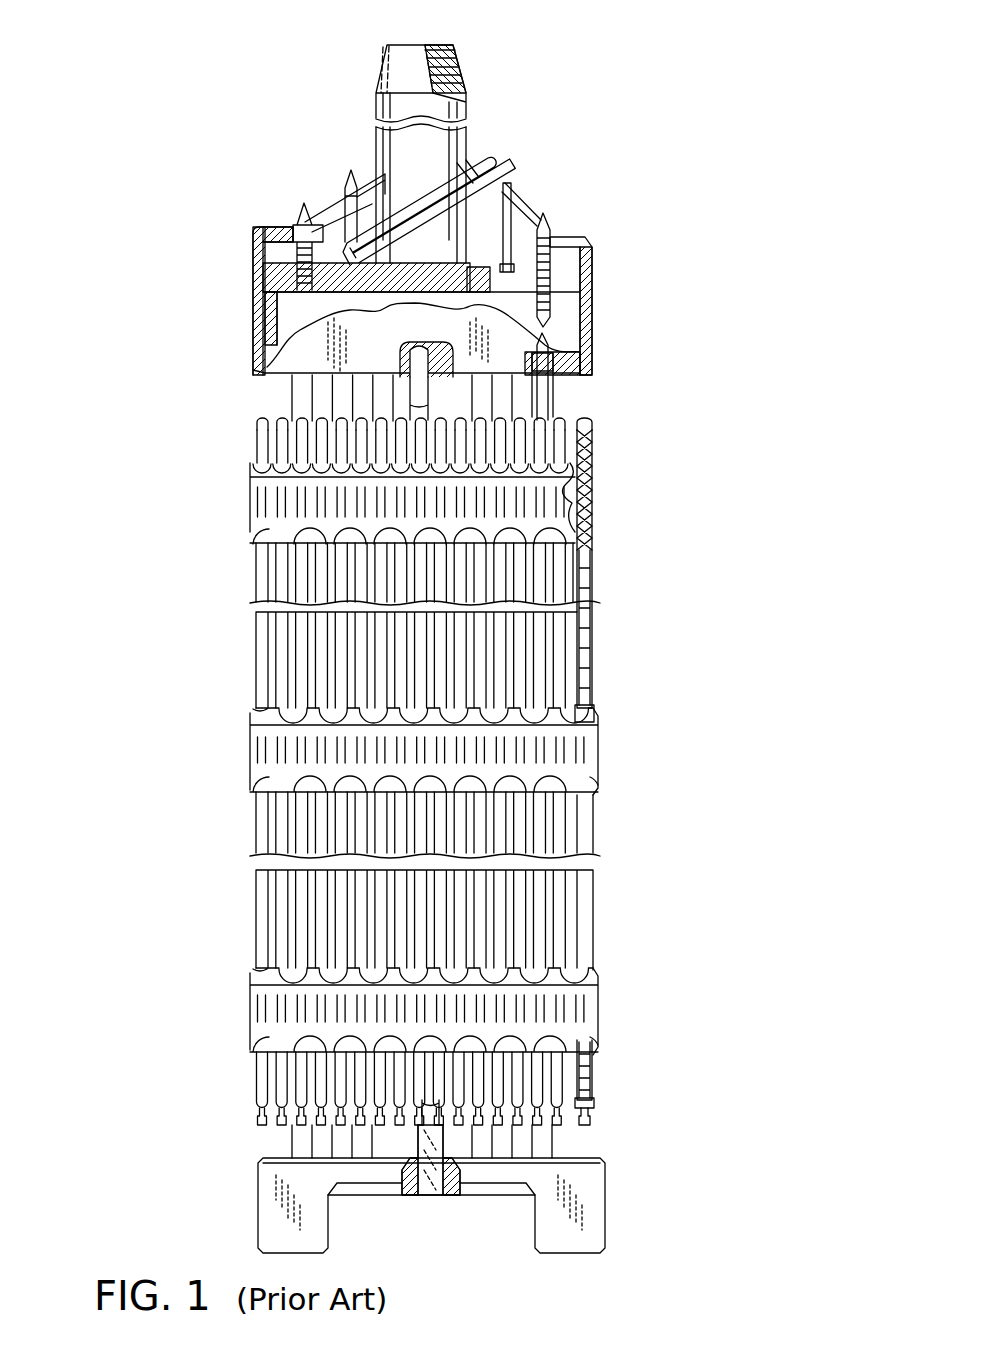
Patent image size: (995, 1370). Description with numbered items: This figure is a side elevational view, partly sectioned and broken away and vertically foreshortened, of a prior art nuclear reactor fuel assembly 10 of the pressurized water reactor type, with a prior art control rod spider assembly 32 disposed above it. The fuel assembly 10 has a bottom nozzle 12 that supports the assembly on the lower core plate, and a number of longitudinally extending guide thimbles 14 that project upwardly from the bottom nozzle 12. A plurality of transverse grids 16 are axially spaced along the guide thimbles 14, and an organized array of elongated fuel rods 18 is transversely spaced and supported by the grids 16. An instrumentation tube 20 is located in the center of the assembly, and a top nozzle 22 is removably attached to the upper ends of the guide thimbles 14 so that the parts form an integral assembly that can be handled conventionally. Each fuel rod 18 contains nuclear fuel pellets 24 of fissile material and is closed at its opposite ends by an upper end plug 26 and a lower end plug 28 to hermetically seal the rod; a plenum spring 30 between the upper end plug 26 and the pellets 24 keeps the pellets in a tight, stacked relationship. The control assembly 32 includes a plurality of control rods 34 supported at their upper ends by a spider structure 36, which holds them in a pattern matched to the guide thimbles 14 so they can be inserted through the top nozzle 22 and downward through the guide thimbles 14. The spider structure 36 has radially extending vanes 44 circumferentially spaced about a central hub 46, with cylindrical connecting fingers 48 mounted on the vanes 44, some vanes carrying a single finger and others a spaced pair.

The fuel assembly 10 is at (195, 132).
The bottom nozzle 12 is at (605, 1228).
The guide thimbles 14 is at (290, 403).
The grids 16 is at (253, 498).
The fuel rods 18 is at (594, 572).
The instrumentation tube 20 is at (425, 1183).
The top nozzle 22 is at (592, 300).
The fuel pellets 24 is at (596, 605).
The upper end plug 26 is at (255, 426).
The lower end plug 28 is at (262, 1115).
The plenum spring 30 is at (594, 500).
The control rod spider assembly 32 is at (513, 150).
The control rods 34 is at (588, 352).
The spider structure 36 is at (530, 210).
The vanes 44 is at (343, 200).
The central hub 46 is at (375, 152).
The connecting fingers 48 is at (296, 219).